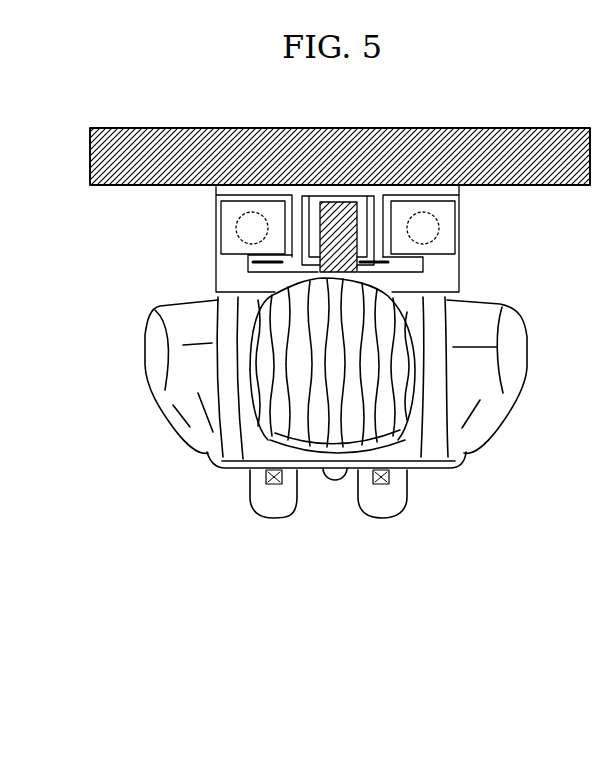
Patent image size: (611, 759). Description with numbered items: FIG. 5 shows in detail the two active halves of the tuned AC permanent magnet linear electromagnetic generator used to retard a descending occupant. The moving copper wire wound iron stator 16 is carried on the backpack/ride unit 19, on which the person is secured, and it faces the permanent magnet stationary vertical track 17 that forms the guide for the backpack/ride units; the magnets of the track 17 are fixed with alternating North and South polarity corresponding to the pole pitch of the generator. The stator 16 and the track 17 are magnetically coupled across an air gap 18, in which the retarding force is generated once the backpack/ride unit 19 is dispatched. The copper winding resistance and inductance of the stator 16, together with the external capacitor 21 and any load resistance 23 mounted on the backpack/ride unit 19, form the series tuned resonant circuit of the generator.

The moving copper wire wound iron stator 16 is at (352, 268).
The permanent magnet stationary vertical track 17 is at (247, 263).
The air gap 18 is at (337, 197).
The backpack/ride unit 19 is at (216, 245).
The capacitor 21 is at (424, 229).
The load resistance 23 is at (237, 223).